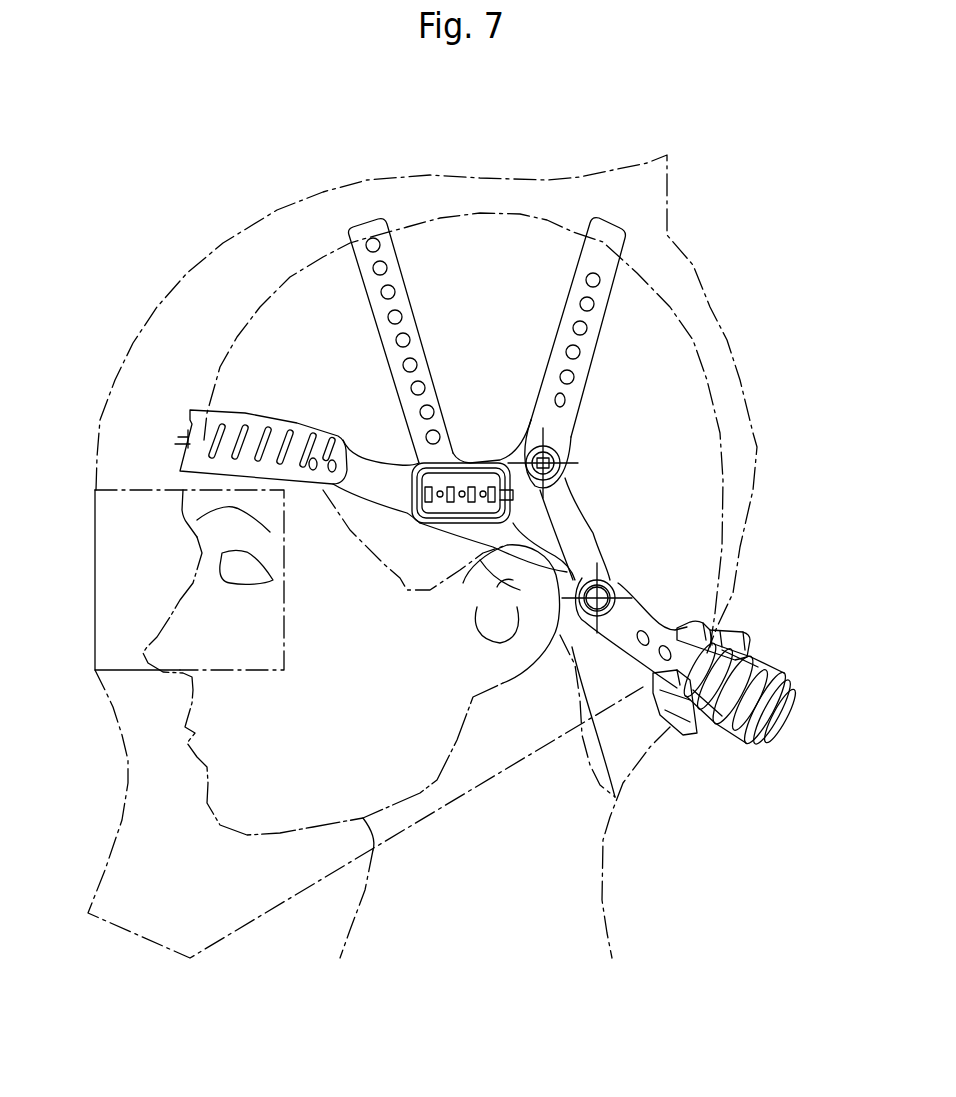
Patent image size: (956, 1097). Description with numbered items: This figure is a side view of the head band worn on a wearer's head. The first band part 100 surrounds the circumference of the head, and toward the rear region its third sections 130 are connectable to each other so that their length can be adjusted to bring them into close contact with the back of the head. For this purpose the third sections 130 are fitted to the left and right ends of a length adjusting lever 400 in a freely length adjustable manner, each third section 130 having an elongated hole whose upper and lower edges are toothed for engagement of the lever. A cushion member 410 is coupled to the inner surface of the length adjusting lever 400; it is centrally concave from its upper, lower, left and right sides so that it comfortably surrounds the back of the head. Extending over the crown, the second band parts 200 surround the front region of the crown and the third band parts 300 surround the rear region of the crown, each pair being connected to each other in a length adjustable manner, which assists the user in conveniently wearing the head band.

The first band part 100 is at (283, 417).
The second band part 200 is at (405, 272).
The third band part 300 is at (613, 297).
The third section 130 is at (630, 622).
The length adjusting lever 400 is at (738, 684).
The cushion member 410 is at (656, 676).